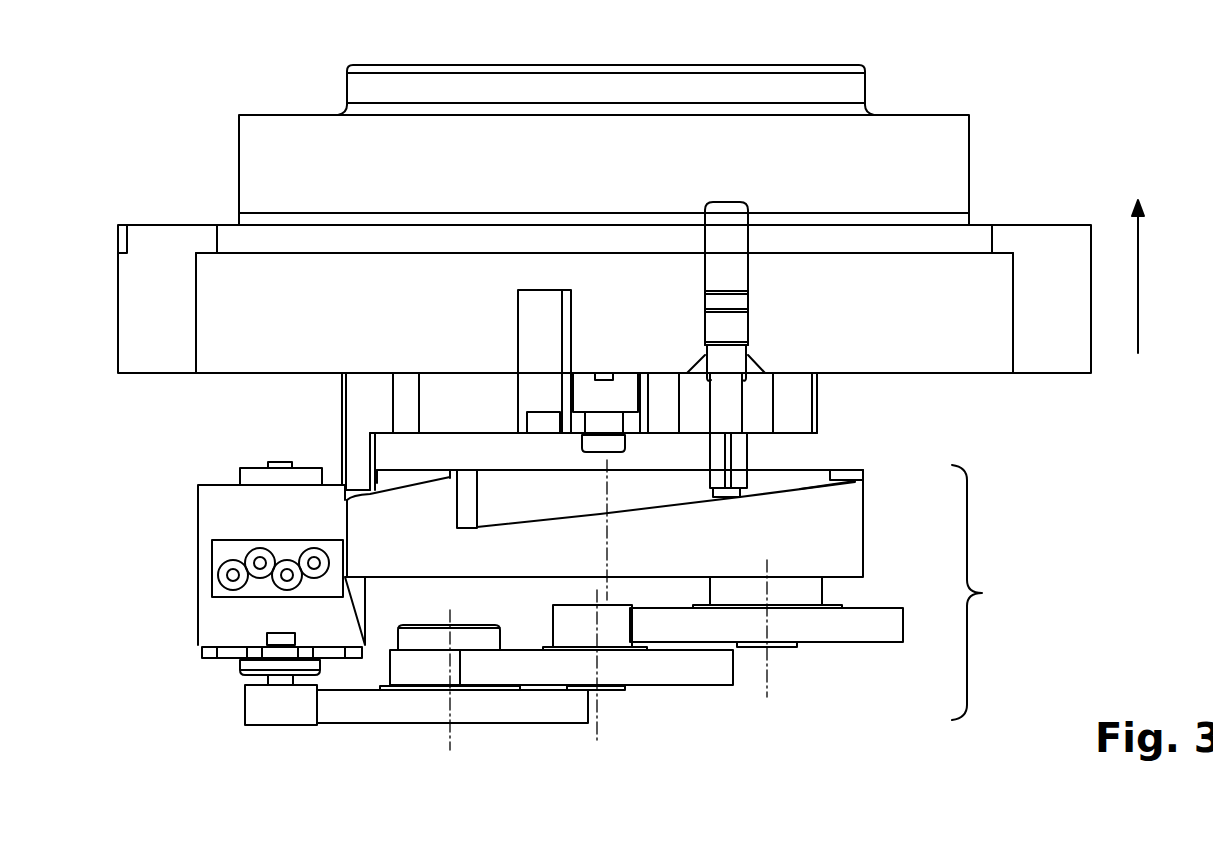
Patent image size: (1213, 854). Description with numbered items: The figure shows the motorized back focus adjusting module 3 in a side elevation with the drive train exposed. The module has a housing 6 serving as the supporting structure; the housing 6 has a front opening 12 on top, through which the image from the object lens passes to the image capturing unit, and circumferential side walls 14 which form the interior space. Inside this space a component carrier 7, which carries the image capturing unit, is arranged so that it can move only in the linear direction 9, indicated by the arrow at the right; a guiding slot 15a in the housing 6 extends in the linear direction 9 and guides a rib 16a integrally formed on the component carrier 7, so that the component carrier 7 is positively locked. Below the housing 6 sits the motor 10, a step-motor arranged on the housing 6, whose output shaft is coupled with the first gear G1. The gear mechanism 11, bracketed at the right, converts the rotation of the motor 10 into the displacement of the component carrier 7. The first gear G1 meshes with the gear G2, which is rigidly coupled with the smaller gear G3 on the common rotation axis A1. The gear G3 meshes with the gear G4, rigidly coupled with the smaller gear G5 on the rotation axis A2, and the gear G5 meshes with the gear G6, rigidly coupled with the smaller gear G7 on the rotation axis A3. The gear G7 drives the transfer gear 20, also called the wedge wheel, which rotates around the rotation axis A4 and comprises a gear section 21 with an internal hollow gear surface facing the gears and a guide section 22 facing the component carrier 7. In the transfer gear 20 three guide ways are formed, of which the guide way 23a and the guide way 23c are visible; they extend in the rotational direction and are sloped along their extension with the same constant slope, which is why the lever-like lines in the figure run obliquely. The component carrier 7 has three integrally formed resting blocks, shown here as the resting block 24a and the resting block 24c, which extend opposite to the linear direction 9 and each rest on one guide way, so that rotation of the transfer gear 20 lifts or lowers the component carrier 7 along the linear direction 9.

The motorized back focus adjusting module 3 is at (1063, 107).
The housing 6 is at (217, 326).
The component carrier 7 is at (440, 398).
The linear direction 9 is at (1140, 283).
The motor 10 is at (205, 517).
The gear mechanism 11 is at (983, 592).
The front opening 12 is at (814, 62).
The circumferential side walls 14 is at (130, 283).
The guiding slot 15a is at (728, 213).
The rib 16a is at (730, 397).
The transfer gear 20 is at (653, 523).
The gear section 21 is at (845, 553).
The guide section 22 is at (790, 492).
The guide way 23a is at (850, 483).
The guide way 23c is at (400, 487).
The resting block 24a is at (740, 450).
The resting block 24c is at (358, 414).
The rotation axis A1 is at (455, 747).
The rotation axis A2 is at (600, 720).
The rotation axis A3 is at (770, 680).
The rotation axis A4 is at (610, 550).
The first gear G1 is at (281, 705).
The gear G2 is at (452, 706).
The gear G3 is at (445, 655).
The gear G4 is at (556, 670).
The gear G5 is at (595, 627).
The gear G6 is at (766, 627).
The gear G7 is at (767, 592).